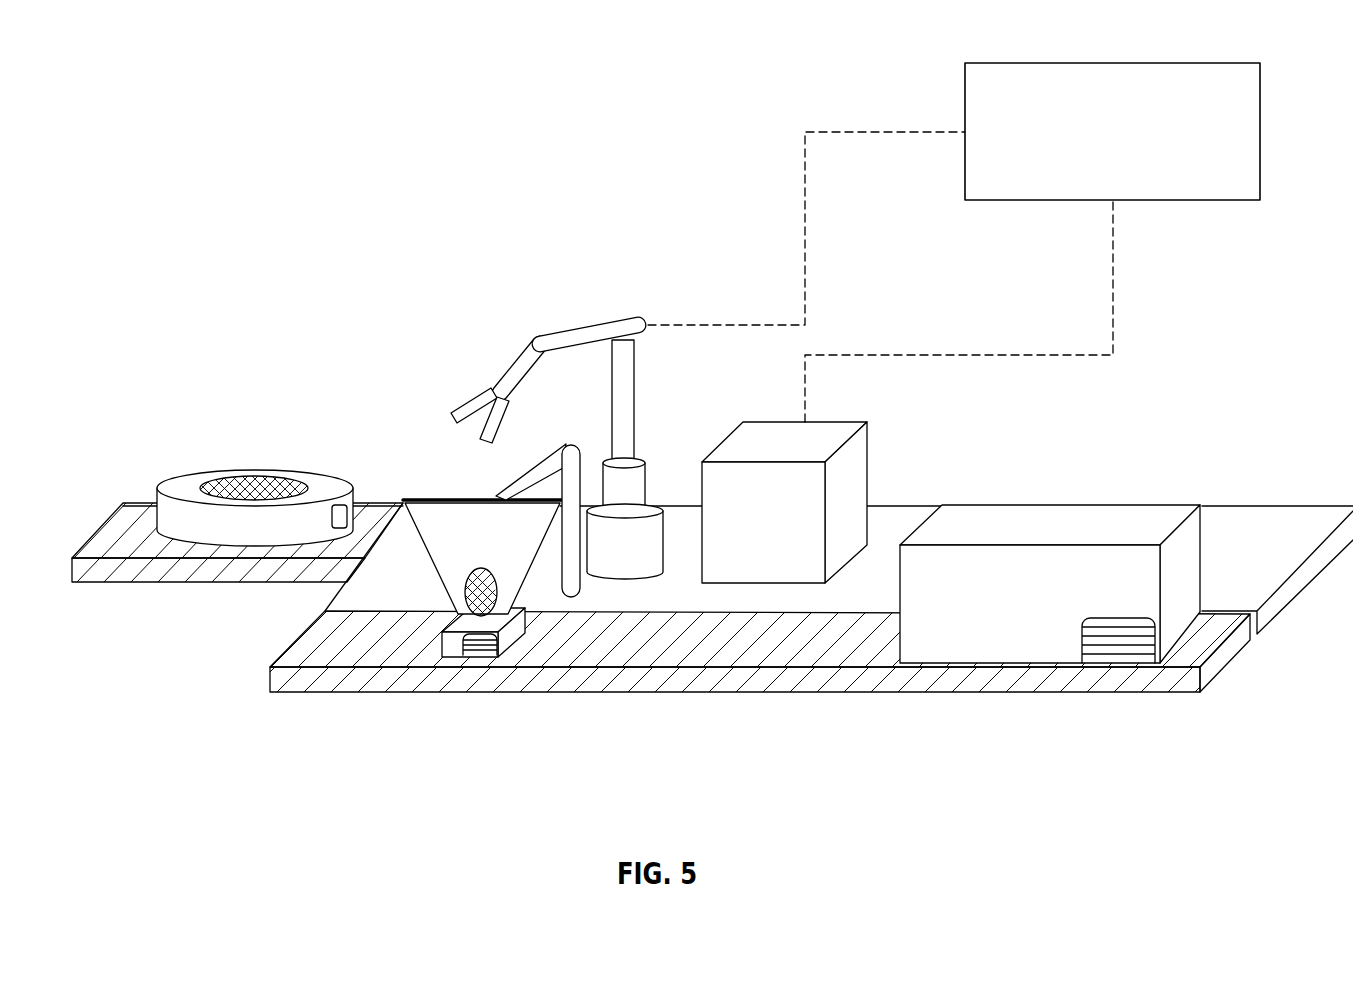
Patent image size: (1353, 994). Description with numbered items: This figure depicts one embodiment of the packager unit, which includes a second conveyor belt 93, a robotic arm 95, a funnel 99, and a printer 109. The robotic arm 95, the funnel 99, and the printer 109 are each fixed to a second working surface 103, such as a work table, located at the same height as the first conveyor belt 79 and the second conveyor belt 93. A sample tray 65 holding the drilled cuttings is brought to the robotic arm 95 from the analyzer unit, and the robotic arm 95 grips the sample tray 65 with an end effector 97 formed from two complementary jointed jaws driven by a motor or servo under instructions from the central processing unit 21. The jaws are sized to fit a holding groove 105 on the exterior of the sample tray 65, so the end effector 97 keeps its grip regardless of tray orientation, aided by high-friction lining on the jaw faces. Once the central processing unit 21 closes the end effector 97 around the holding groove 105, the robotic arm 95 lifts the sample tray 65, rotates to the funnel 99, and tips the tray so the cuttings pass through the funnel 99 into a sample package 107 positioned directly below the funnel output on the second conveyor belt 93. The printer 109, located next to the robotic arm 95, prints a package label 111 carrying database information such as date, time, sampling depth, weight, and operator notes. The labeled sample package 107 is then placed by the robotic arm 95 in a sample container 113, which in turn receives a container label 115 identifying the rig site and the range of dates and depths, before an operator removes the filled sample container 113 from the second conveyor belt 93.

The central processing unit 21 is at (1099, 177).
The sample tray 65 is at (153, 500).
The first conveyor belt 79 is at (100, 535).
The second conveyor belt 93 is at (727, 693).
The robotic arm 95 is at (585, 320).
The end effector 97 is at (469, 382).
The funnel 99 is at (496, 559).
The second working surface 103 is at (1280, 518).
The holding groove 105 is at (340, 502).
The sample package 107 is at (442, 642).
The printer 109 is at (786, 553).
The package label 111 is at (480, 657).
The sample container 113 is at (1058, 603).
The container label 115 is at (1120, 665).